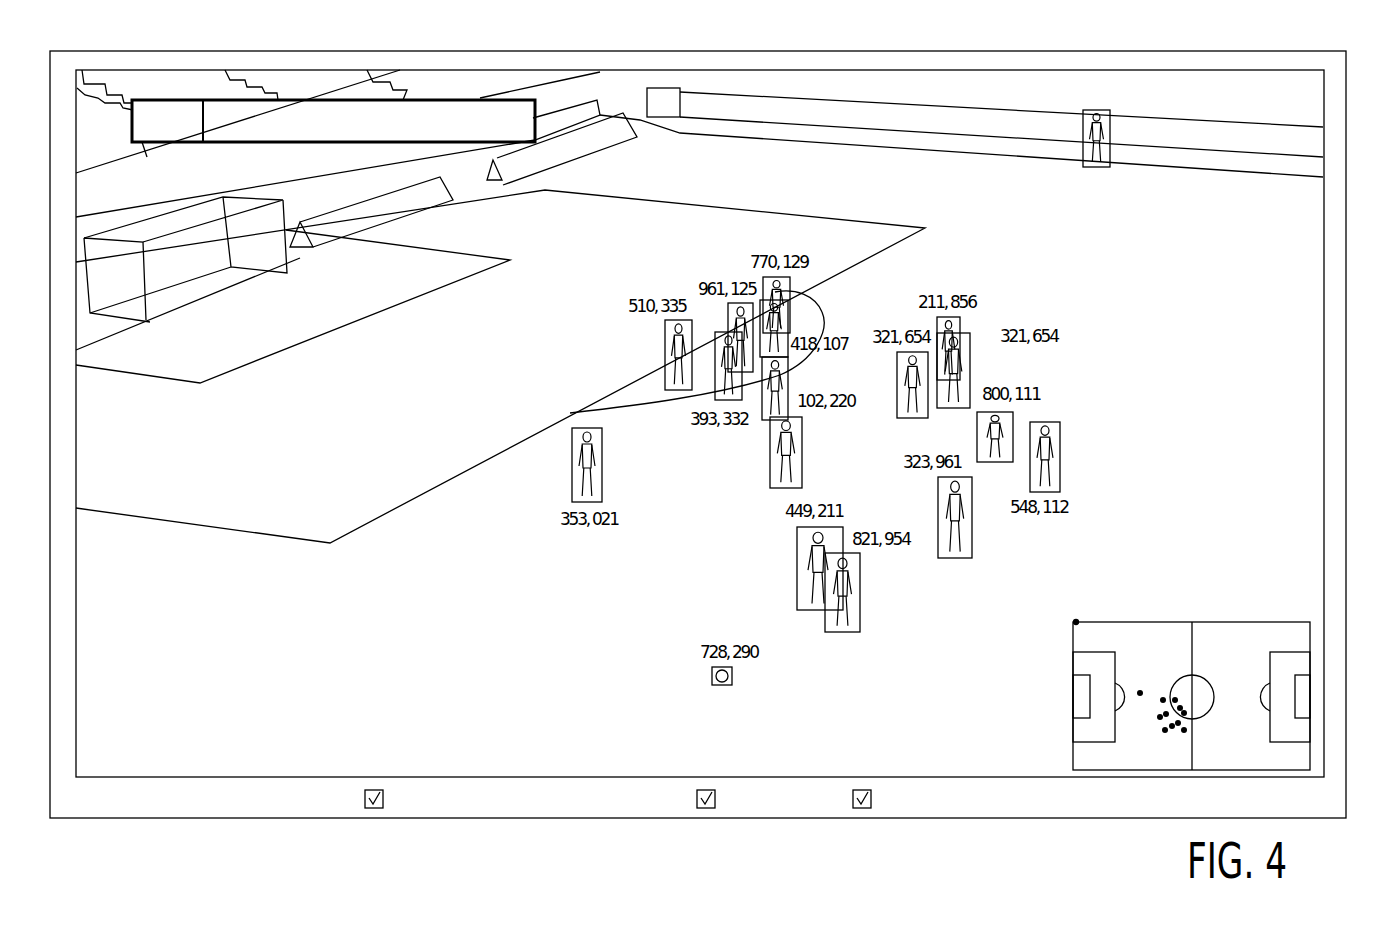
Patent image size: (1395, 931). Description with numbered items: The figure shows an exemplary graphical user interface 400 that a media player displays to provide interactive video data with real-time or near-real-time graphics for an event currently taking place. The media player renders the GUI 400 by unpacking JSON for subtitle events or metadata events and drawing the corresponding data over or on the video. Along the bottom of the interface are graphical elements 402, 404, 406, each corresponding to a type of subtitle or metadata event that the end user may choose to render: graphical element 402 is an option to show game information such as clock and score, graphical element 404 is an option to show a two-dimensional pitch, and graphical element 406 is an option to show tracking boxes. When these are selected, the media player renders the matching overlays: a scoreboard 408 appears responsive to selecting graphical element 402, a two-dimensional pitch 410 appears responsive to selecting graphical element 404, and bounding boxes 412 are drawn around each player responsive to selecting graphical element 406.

The graphical user interface 400 is at (96, 38).
The graphical element 402 is at (452, 818).
The graphical element 404 is at (745, 818).
The graphical element 406 is at (963, 818).
The scoreboard 408 is at (515, 113).
The 2D pitch 410 is at (1302, 699).
The bounding boxes 412 is at (1062, 445).